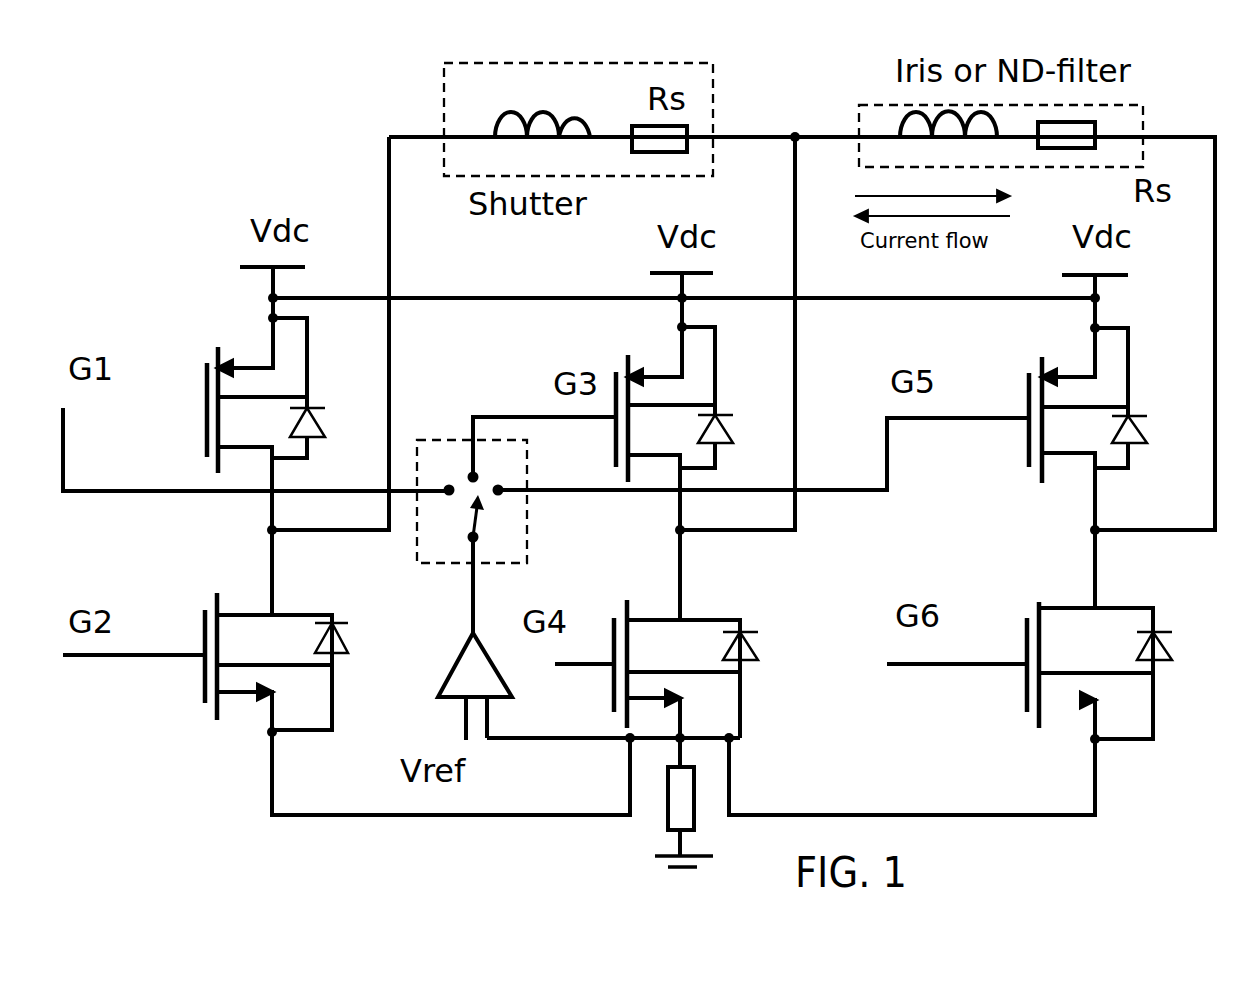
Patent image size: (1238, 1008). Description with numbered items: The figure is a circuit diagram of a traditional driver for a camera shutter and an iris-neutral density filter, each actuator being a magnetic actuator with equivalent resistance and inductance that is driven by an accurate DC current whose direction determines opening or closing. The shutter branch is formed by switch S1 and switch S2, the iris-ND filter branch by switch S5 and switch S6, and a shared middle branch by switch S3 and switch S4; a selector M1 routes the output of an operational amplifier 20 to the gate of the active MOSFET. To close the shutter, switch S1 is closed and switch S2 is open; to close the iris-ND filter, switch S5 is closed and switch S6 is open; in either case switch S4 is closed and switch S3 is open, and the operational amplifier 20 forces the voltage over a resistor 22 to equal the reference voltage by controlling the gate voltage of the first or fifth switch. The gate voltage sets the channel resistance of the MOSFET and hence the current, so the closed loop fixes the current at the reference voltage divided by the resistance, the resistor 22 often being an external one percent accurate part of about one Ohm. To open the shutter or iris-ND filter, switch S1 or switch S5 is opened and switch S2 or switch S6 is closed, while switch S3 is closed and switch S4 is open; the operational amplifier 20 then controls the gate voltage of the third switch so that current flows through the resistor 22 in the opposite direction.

The operational amplifier 20 is at (457, 662).
The resistor 22 is at (668, 773).
The switch S1 is at (293, 456).
The switch S2 is at (237, 661).
The switch S3 is at (699, 459).
The switch S4 is at (688, 669).
The switch S5 is at (1103, 453).
The switch S6 is at (1051, 670).
The current mirror / selector M1 is at (503, 505).